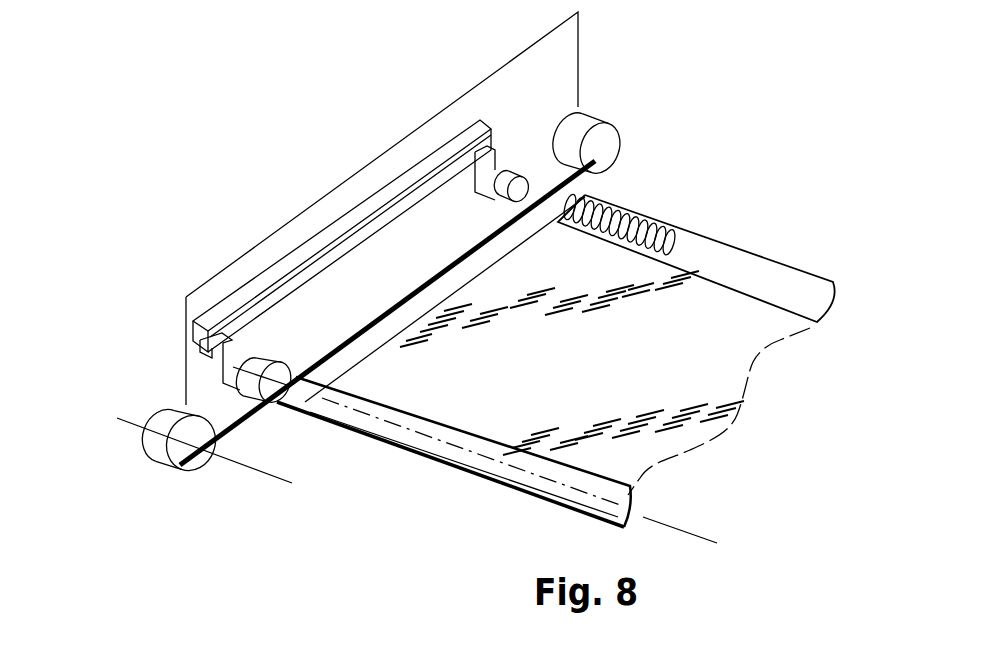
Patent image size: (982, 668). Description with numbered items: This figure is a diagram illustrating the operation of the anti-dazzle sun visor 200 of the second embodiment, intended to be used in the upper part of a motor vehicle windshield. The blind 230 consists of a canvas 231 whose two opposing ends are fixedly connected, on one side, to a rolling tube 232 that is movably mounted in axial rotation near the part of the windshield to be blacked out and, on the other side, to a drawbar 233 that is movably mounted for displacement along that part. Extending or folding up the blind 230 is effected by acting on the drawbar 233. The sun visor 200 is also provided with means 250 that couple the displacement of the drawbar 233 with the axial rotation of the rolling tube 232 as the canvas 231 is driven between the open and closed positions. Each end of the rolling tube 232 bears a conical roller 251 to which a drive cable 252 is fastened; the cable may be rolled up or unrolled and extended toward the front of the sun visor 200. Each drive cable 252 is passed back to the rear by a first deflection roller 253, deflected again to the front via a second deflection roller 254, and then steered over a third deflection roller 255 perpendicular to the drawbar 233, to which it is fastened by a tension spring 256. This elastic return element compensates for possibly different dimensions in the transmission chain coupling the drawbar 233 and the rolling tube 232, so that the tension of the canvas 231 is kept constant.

The anti-dazzle sun visor 200 is at (341, 488).
The blind 230 is at (714, 450).
The canvas 231 is at (700, 342).
The rolling tube 232 is at (513, 470).
The drawbar 233 is at (742, 262).
The means for coupling 250 is at (420, 289).
The conical roller 251 is at (279, 371).
The drive cable 252 is at (207, 405).
The first deflection roller 253 is at (143, 440).
The second deflection roller 254 is at (618, 135).
The third deflection roller 255 is at (500, 170).
The tension spring 256 is at (633, 215).